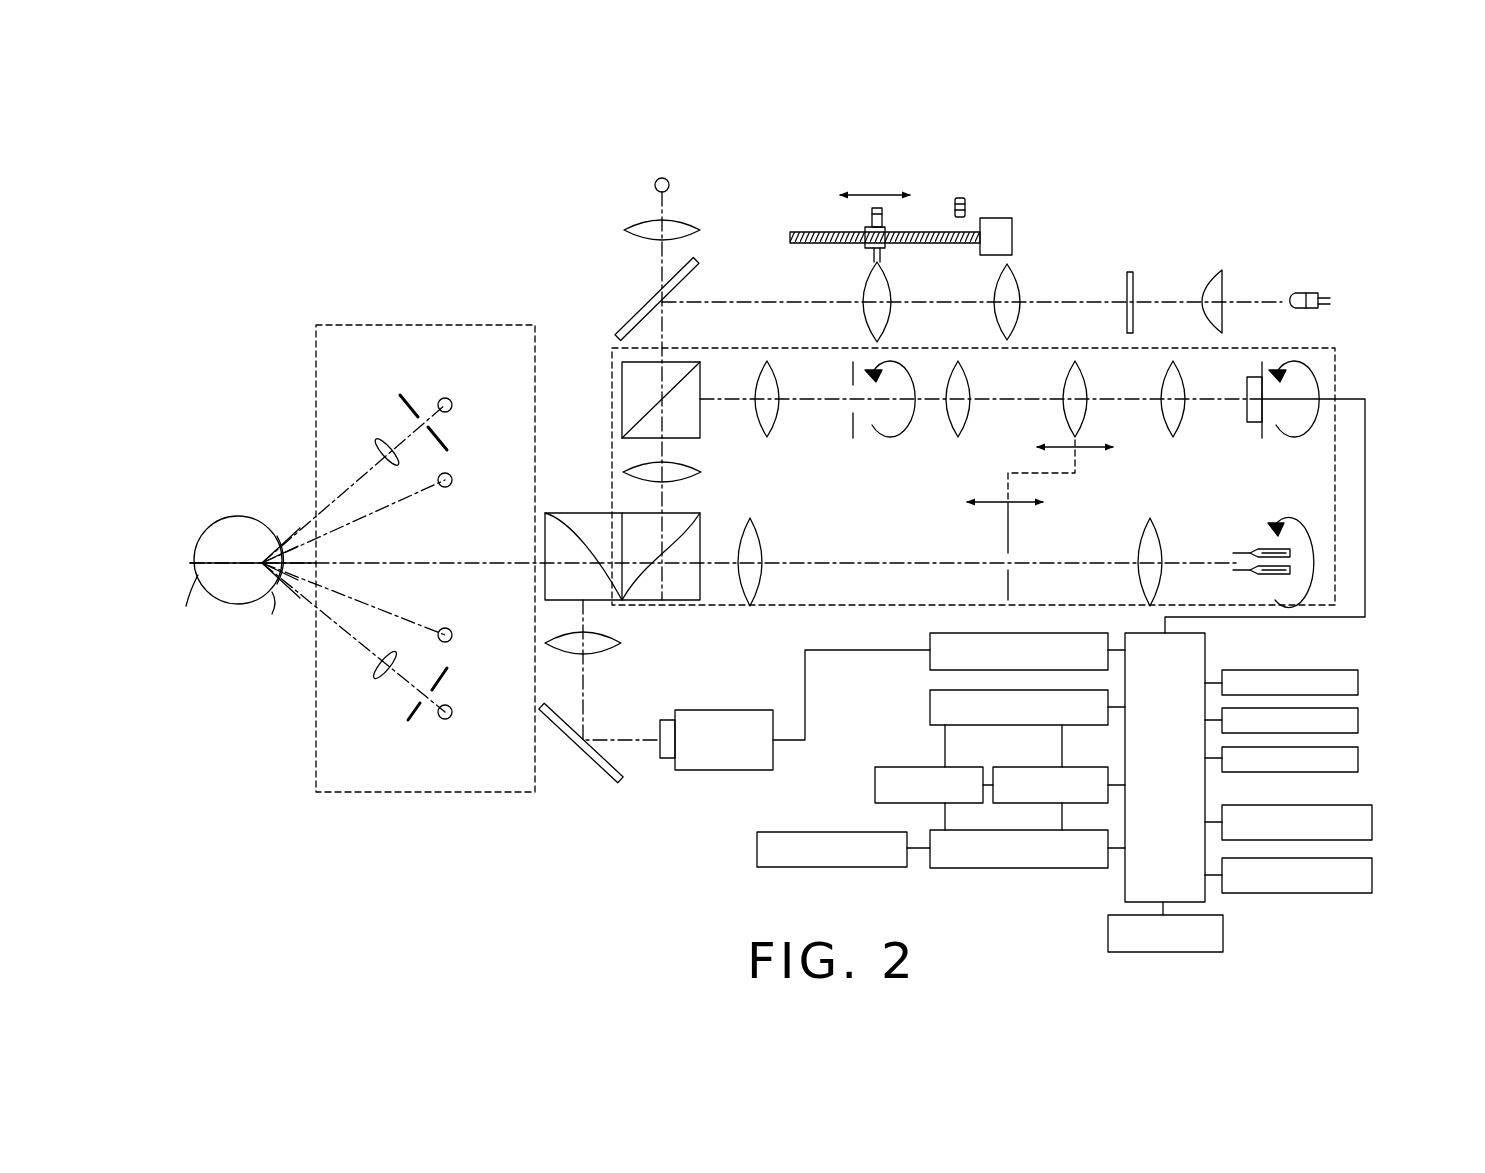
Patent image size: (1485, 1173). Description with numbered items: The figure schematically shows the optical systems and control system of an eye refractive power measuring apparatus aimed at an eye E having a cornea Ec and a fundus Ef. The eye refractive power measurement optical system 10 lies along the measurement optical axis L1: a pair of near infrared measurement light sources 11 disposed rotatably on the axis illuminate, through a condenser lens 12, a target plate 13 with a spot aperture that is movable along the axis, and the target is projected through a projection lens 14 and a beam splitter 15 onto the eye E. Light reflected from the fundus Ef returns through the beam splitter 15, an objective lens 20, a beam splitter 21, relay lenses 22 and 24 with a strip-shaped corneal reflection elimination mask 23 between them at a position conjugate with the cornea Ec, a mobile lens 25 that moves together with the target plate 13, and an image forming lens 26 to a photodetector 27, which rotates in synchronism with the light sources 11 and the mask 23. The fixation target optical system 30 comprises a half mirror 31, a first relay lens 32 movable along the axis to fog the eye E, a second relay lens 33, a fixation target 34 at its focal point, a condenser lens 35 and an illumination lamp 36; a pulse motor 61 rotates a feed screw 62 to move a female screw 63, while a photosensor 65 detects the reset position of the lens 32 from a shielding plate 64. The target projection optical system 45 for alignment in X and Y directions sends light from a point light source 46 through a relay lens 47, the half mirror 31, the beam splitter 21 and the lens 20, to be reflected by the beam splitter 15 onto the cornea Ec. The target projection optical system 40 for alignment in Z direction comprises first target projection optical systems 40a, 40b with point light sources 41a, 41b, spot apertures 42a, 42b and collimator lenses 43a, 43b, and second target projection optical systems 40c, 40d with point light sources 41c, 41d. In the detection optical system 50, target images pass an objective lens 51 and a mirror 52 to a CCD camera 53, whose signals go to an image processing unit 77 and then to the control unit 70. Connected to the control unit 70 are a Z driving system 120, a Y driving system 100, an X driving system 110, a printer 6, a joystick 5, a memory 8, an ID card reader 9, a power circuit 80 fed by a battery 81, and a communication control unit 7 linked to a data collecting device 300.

The eye to be examined E is at (235, 525).
The fundus Ef is at (194, 613).
The cornea Ec is at (279, 622).
The measurement optical axis L1 is at (452, 565).
The target projection optical system for alignment in Z direction 40 is at (450, 324).
The first target projection optical system 40a is at (352, 464).
The first target projection optical system 40b is at (336, 634).
The second target projection optical system 40c is at (412, 507).
The second target projection optical system 40d is at (410, 636).
The point light source 41a is at (443, 398).
The point light source 41b is at (443, 719).
The point light source 41c is at (452, 478).
The point light source 41d is at (452, 635).
The spot aperture 42a is at (400, 395).
The spot aperture 42b is at (408, 720).
The collimator lens 43a is at (377, 446).
The collimator lens 43b is at (375, 680).
The target projection optical system for alignment in X and Y directions 45 is at (608, 204).
The point light source 46 is at (670, 186).
The relay lens 47 is at (690, 238).
The half mirror 31 is at (648, 298).
The fixation target optical system 30 is at (1327, 233).
The eye refractive power measurement optical system 10 is at (1338, 352).
The beam splitter 21 is at (630, 370).
The objective lens 20 is at (682, 468).
The relay lens 22 is at (770, 430).
The corneal reflection elimination mask 23 is at (856, 428).
The relay lens 24 is at (958, 436).
The mobile lens 25 is at (1066, 418).
The image forming lens 26 is at (1164, 418).
The photodetector for measurement 27 is at (1247, 418).
The target plate 13 is at (1010, 533).
The beam splitter 15 is at (603, 522).
The projection lens 14 is at (754, 528).
The condenser lens 12 is at (1154, 532).
The measurement light sources 11 is at (1262, 546).
The feed screw 62 is at (796, 232).
The female screw 63 is at (865, 232).
The shielding plate 64 is at (880, 194).
The photosensor 65 is at (960, 198).
The pulse motor 61 is at (1000, 235).
The first relay lens 32 is at (882, 300).
The second relay lens 33 is at (1012, 280).
The fixation target 34 is at (1133, 285).
The condenser lens 35 is at (1215, 283).
The illumination lamp 36 is at (1316, 294).
The objective lens 51 is at (605, 648).
The mirror 52 is at (604, 772).
The CCD camera 53 is at (680, 712).
The detection optical system 50 is at (704, 678).
The image processing unit 77 is at (930, 652).
The ID card reader 9 is at (930, 710).
The battery 81 is at (908, 768).
The power circuit 80 is at (1052, 768).
The communication control unit 7 is at (1030, 870).
The data collecting device 300 is at (762, 866).
The control unit 70 is at (1205, 650).
The Z driving system 120 is at (1358, 683).
The Y driving system 100 is at (1358, 720).
The X driving system 110 is at (1358, 758).
The printer 6 is at (1372, 822).
The joystick 5 is at (1372, 875).
The memory 8 is at (1223, 932).